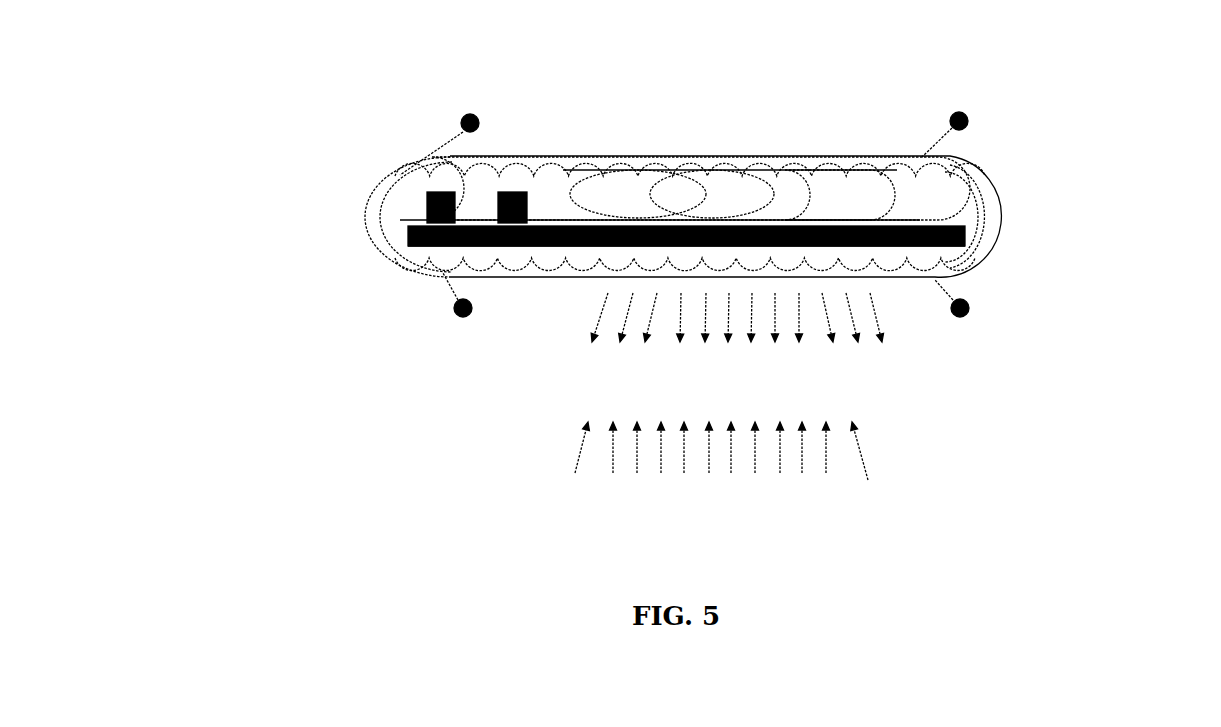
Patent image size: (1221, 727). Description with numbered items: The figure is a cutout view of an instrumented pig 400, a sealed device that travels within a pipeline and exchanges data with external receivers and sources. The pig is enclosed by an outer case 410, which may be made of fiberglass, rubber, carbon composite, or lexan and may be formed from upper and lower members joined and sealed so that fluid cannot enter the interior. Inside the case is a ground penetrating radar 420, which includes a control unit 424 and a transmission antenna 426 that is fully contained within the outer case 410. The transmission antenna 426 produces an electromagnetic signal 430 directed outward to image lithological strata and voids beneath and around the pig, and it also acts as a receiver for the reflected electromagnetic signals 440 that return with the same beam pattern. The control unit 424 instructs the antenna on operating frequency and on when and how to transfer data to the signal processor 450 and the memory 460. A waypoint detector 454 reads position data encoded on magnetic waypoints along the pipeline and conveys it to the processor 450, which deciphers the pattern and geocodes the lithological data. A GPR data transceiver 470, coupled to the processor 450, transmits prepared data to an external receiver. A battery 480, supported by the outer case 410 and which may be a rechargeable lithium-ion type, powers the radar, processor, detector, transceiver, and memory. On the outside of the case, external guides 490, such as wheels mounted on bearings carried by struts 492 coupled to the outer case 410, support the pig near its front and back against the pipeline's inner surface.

The instrumented pig 400 is at (291, 161).
The outer case 410 is at (998, 192).
The ground penetrating radar 420 is at (400, 228).
The control unit 424 is at (607, 187).
The transmission antenna 426 is at (400, 240).
The electromagnetic signal 430 is at (900, 323).
The reflected electromagnetic signals 440 is at (880, 442).
The signal processor 450 is at (694, 170).
The waypoint detector 454 is at (428, 192).
The memory 460 is at (765, 168).
The GPR data transceiver 470 is at (508, 190).
The battery 480 is at (898, 183).
The external guide 490 is at (461, 118).
The strut 492 is at (447, 145).